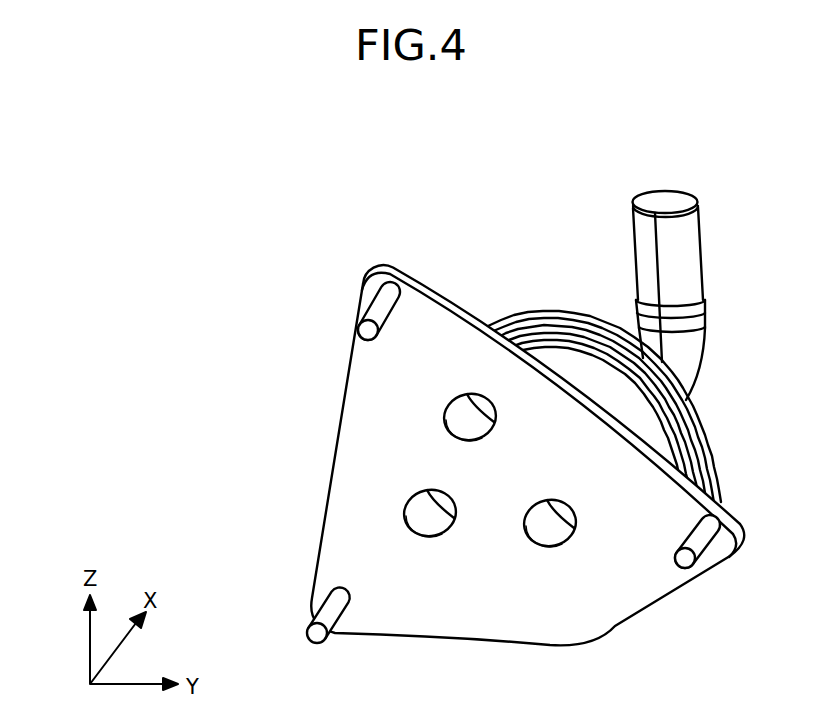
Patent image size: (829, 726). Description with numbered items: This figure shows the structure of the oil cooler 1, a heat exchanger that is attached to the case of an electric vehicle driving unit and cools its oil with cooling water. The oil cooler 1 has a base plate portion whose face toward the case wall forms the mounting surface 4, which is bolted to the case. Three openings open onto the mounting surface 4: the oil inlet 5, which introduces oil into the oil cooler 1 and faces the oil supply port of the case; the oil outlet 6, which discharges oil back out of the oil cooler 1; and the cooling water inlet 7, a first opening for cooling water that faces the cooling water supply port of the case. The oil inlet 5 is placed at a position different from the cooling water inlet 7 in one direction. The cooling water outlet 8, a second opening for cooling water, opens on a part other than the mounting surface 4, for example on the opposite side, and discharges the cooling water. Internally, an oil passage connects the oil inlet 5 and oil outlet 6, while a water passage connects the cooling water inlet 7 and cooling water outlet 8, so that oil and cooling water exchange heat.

The oil cooler 1 is at (507, 170).
The mounting surface 4 is at (462, 630).
The oil inlet 5 is at (443, 415).
The oil outlet 6 is at (404, 512).
The cooling water inlet 7 is at (575, 535).
The cooling water outlet 8 is at (668, 207).